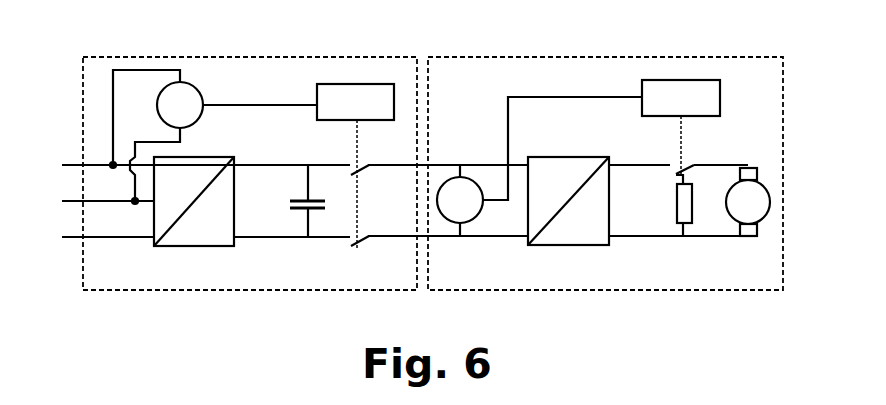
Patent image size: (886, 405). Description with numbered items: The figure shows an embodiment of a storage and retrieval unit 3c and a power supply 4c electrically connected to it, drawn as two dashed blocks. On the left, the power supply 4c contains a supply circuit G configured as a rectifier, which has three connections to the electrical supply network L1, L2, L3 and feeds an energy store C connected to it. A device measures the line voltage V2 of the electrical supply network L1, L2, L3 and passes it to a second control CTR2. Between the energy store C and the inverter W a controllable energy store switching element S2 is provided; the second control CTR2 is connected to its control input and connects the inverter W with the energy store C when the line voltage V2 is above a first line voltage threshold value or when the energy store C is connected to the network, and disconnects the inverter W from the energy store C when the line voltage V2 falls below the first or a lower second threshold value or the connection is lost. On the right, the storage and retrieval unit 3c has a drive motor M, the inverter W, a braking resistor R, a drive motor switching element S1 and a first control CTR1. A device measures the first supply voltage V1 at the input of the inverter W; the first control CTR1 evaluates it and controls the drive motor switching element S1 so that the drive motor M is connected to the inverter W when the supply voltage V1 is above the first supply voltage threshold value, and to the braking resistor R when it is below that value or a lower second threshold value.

The electrical supply network line L1 is at (385, 166).
The electrical supply network line L2 is at (88, 203).
The electrical supply network line L3 is at (385, 239).
The power supply 4c is at (250, 158).
The storage and retrieval unit 3c is at (605, 159).
The supply circuit G is at (194, 218).
The line voltage V2 is at (156, 137).
The second control CTR2 is at (298, 166).
The energy store C is at (296, 200).
The energy store switching element S2 is at (374, 192).
The supply voltage V1 is at (460, 200).
The inverter W is at (568, 217).
The first control CTR1 is at (601, 140).
The drive motor switching element S1 is at (701, 156).
The braking resistor R is at (670, 205).
The drive motor M is at (748, 202).